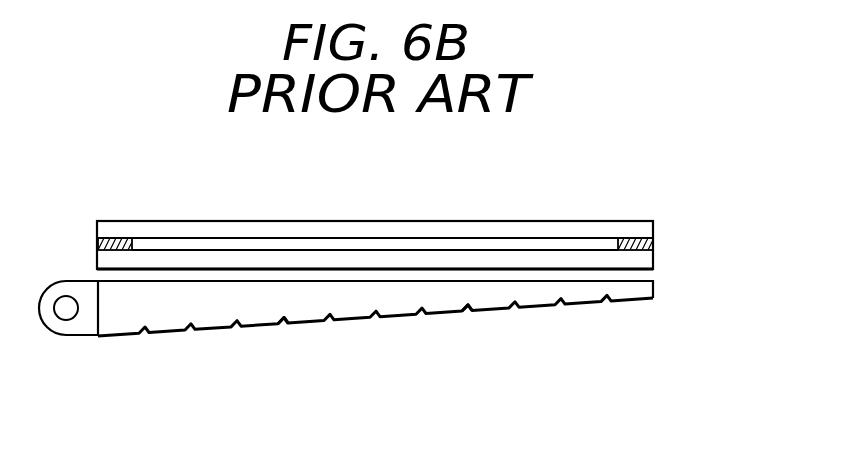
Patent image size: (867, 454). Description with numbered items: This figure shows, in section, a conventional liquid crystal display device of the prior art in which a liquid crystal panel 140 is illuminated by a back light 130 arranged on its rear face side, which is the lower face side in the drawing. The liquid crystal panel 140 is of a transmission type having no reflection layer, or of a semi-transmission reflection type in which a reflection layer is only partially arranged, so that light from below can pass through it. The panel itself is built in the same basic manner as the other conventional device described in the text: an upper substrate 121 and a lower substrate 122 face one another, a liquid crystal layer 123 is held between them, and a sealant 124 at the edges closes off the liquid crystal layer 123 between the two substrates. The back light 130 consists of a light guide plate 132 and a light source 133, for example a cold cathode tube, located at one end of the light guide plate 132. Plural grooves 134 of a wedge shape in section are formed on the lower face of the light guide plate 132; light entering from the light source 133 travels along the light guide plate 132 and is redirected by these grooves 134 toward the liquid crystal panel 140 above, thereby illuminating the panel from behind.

The upper substrate 121 is at (352, 226).
The lower substrate 122 is at (395, 260).
The liquid crystal layer 123 is at (500, 243).
The sealant 124 is at (632, 240).
The back light 130 is at (650, 289).
The light guide plate 132 is at (392, 312).
The light source 133 is at (66, 316).
The grooves 134 is at (288, 328).
The liquid crystal panel 140 is at (648, 228).